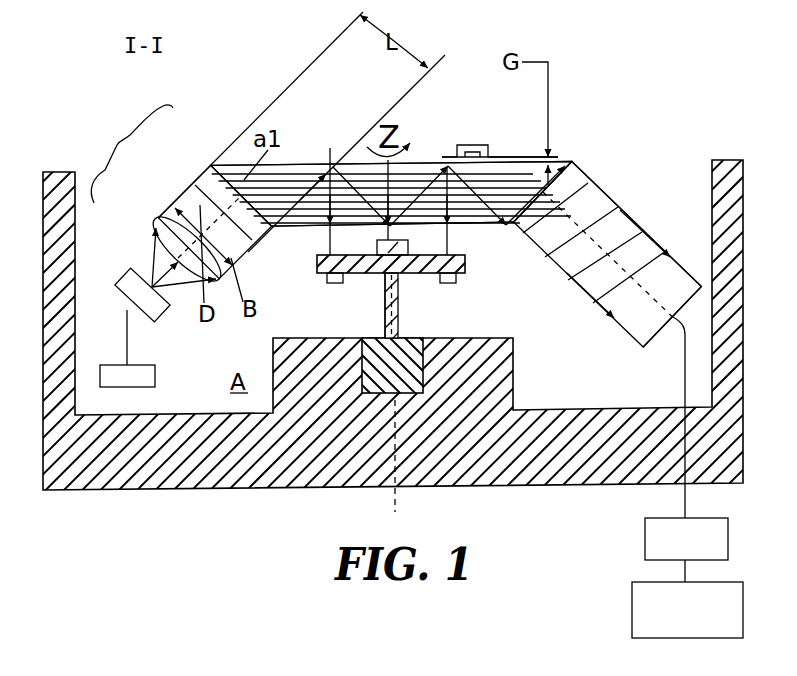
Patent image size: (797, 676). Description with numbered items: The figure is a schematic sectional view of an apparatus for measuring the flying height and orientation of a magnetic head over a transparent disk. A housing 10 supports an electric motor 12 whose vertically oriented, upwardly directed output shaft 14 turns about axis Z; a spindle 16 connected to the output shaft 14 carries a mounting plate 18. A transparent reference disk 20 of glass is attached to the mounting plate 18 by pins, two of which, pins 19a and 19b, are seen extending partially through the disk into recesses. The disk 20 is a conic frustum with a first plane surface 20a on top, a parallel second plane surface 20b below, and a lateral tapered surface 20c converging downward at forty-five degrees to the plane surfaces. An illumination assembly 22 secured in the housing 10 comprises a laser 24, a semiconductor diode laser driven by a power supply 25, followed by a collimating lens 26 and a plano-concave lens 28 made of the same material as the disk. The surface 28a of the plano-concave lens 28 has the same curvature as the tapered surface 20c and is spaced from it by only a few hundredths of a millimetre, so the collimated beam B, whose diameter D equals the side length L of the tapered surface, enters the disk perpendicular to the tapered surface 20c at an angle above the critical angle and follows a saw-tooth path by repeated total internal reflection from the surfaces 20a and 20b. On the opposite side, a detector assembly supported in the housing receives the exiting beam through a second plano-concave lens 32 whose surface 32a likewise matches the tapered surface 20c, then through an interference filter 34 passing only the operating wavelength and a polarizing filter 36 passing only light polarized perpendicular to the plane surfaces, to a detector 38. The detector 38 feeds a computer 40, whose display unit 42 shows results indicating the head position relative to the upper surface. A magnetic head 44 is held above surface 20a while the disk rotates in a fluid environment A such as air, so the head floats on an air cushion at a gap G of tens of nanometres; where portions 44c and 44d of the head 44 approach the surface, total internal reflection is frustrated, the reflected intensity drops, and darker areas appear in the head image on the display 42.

The housing 10 is at (215, 470).
The electric motor 12 is at (402, 393).
The output shaft 14 is at (400, 328).
The spindle 16 is at (386, 290).
The mounting plate 18 is at (466, 262).
The pin 19a is at (326, 190).
The pin 19b is at (450, 228).
The transparent reference disk 20 is at (360, 165).
The first plane surface 20a is at (300, 165).
The second plane surface 20b is at (295, 226).
The lateral tapered surface 20c is at (226, 175).
The illumination assembly 22 is at (128, 154).
The laser 24 is at (128, 285).
The power supply 25 is at (145, 380).
The collimating lens 26 is at (166, 221).
The plano-concave lens 28 is at (193, 192).
The surface of plano-concave lens 28a is at (207, 174).
The plano-concave lens 32 is at (585, 182).
The surface of plano-concave lens 32a is at (573, 166).
The interference filter 34 is at (633, 200).
The polarizing filter 36 is at (650, 242).
The detector 38 is at (689, 275).
The computer 40 is at (650, 534).
The display unit 42 is at (645, 605).
The magnetic head 44 is at (476, 145).
The portion of magnetic head 44c is at (445, 157).
The portion of magnetic head 44d is at (513, 157).